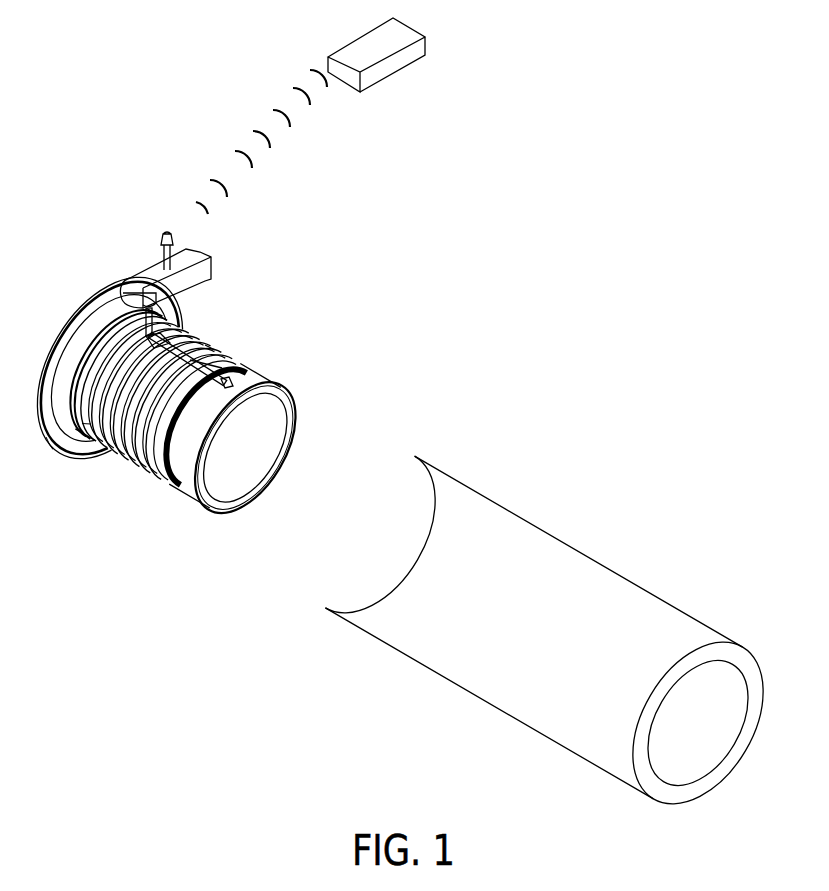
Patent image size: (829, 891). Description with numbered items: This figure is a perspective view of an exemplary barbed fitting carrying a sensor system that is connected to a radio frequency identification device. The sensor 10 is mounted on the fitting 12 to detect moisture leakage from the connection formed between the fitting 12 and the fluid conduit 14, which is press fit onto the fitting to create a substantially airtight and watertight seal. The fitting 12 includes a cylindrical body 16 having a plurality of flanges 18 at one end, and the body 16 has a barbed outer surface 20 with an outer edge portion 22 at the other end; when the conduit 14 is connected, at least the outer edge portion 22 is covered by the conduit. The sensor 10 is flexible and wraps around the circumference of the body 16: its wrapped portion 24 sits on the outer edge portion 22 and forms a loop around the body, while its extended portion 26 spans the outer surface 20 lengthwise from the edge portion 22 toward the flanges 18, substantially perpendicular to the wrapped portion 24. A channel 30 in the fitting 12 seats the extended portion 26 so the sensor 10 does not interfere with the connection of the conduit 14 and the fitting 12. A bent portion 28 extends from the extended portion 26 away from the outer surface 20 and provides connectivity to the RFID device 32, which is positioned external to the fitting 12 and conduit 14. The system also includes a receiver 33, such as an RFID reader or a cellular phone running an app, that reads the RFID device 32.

The sensor 10 is at (214, 351).
The fitting 12 is at (80, 352).
The fluid conduit 14 is at (535, 514).
The cylindrical body 16 is at (173, 490).
The flanges 18 is at (87, 423).
The outer surface 20 is at (140, 457).
The outer edge portion 22 is at (193, 497).
The wrapped portion 24 is at (160, 422).
The extended portion 26 is at (220, 366).
The bent portion 28 is at (168, 310).
The channel 30 is at (251, 373).
The RFID device 32 is at (145, 269).
The receiver 33 is at (372, 40).